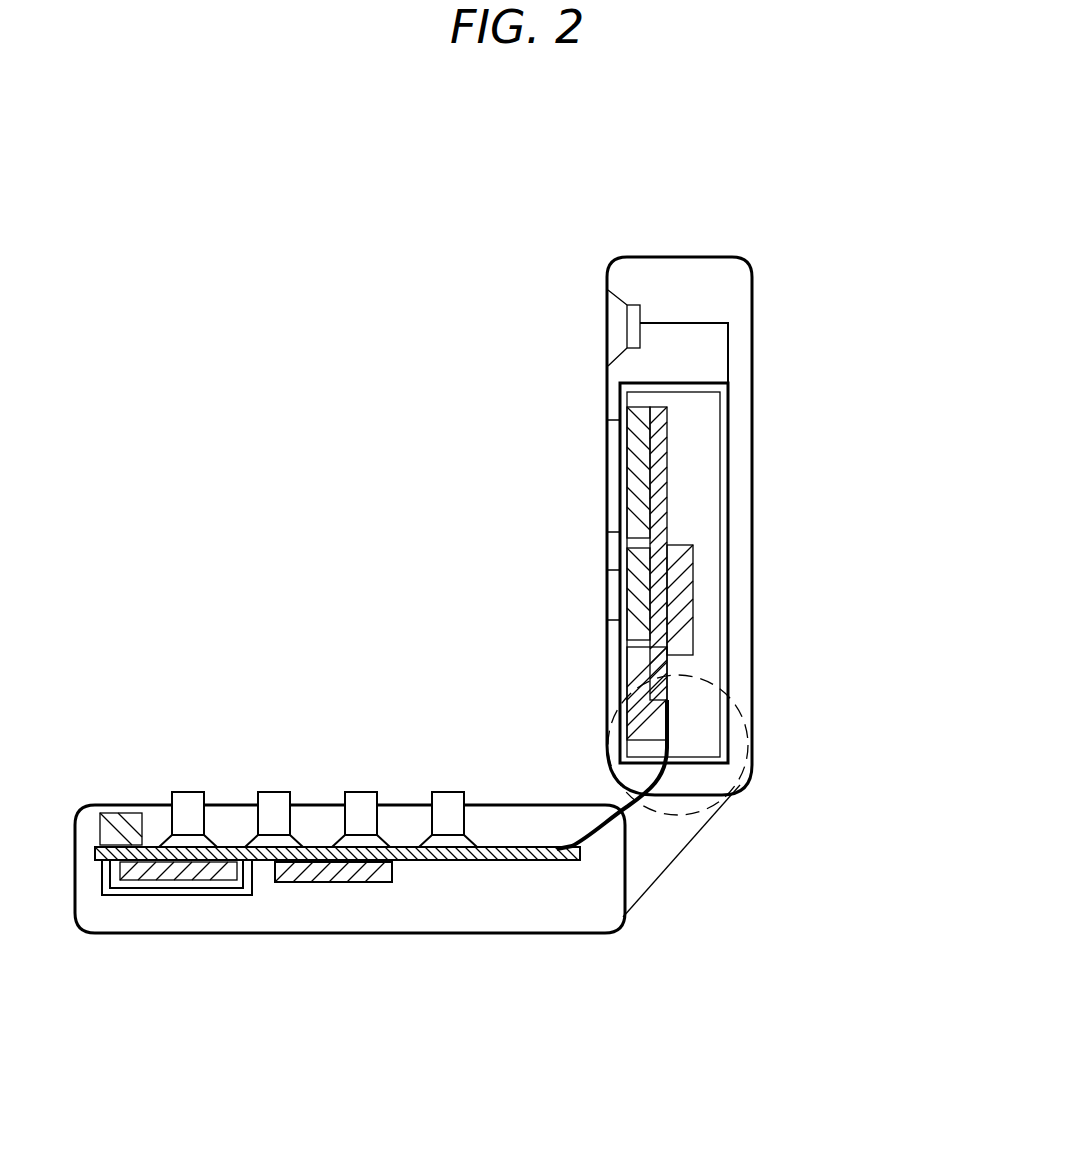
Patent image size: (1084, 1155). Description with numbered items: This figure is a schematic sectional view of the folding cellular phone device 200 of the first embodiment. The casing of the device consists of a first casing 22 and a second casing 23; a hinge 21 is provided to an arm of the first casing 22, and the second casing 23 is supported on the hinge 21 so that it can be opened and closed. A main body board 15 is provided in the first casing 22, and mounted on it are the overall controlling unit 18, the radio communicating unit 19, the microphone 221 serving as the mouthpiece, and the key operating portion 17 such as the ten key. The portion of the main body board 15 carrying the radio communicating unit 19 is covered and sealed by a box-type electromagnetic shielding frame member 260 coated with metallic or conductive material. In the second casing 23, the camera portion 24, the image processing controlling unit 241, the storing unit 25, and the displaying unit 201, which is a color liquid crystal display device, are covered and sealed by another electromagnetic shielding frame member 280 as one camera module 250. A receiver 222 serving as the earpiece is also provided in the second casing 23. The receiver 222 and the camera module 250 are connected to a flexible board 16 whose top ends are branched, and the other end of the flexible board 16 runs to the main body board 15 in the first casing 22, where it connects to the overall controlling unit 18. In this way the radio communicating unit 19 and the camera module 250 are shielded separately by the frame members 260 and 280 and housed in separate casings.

The folding cellular phone device 200 is at (322, 640).
The second casing 23 is at (678, 285).
The receiver 222 is at (616, 320).
The electromagnetic shielding frame member 280 is at (700, 372).
The camera module 250 is at (822, 299).
The displaying unit 201 is at (640, 453).
The camera portion 24 is at (637, 592).
The storing unit 25 is at (683, 567).
The image processing controlling unit 241 is at (645, 662).
The flexible board 16 is at (612, 798).
The hinge 21 is at (710, 797).
The first casing 22 is at (553, 892).
The microphone 221 is at (102, 812).
The main body board 15 is at (413, 860).
The key operating portion 17 is at (273, 810).
The electromagnetic shielding frame member 260 is at (230, 893).
The radio communicating unit 19 is at (183, 875).
The overall controlling unit 18 is at (334, 882).